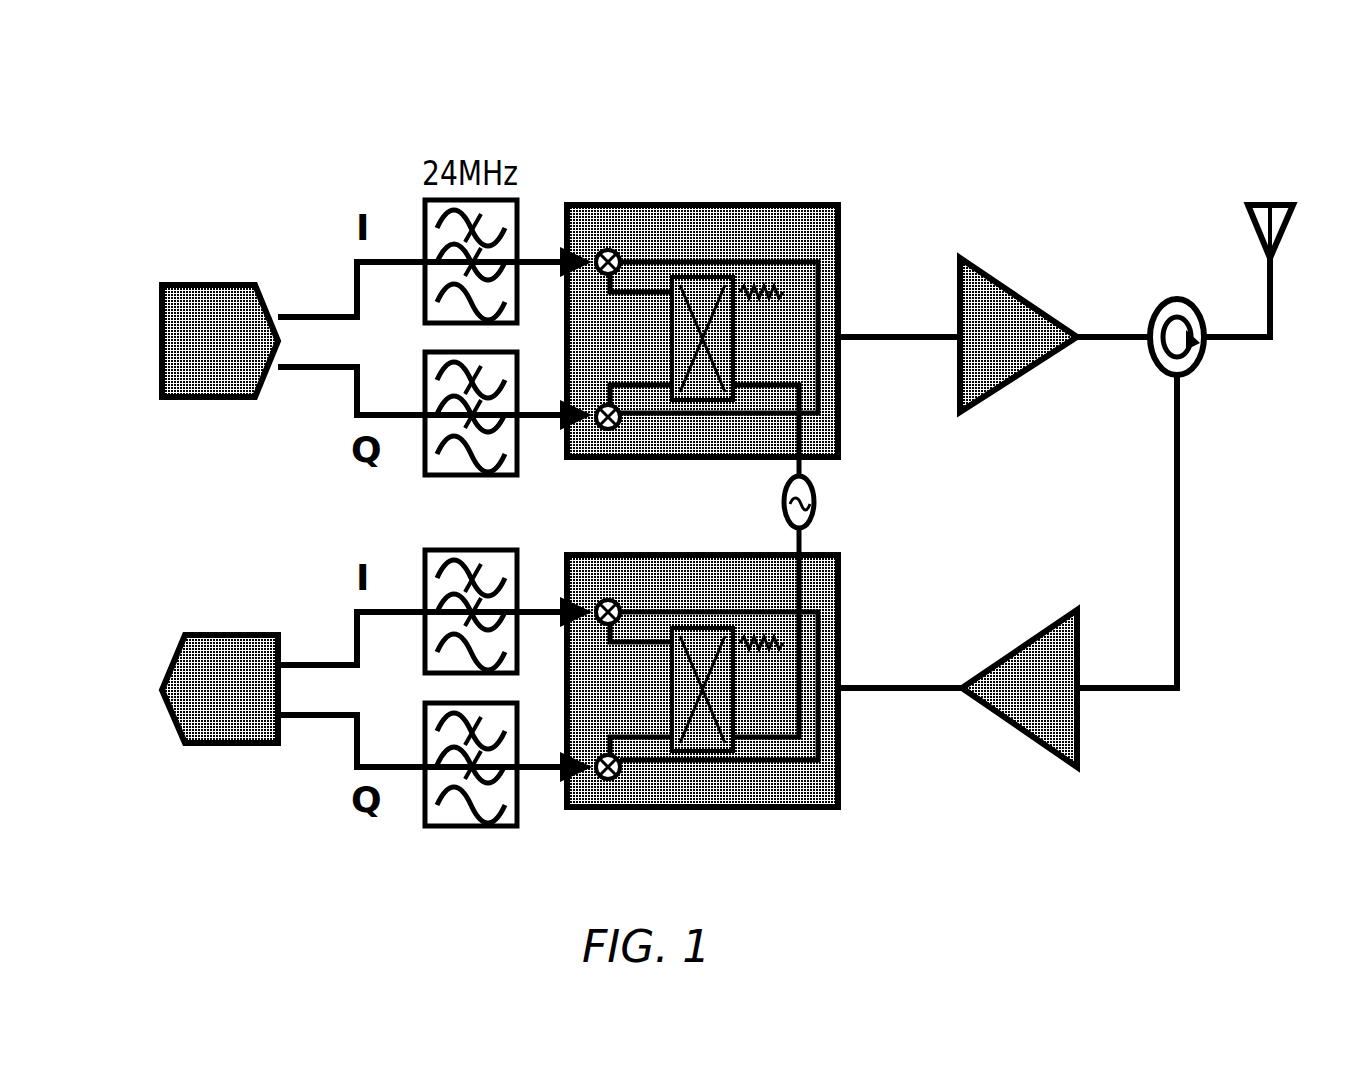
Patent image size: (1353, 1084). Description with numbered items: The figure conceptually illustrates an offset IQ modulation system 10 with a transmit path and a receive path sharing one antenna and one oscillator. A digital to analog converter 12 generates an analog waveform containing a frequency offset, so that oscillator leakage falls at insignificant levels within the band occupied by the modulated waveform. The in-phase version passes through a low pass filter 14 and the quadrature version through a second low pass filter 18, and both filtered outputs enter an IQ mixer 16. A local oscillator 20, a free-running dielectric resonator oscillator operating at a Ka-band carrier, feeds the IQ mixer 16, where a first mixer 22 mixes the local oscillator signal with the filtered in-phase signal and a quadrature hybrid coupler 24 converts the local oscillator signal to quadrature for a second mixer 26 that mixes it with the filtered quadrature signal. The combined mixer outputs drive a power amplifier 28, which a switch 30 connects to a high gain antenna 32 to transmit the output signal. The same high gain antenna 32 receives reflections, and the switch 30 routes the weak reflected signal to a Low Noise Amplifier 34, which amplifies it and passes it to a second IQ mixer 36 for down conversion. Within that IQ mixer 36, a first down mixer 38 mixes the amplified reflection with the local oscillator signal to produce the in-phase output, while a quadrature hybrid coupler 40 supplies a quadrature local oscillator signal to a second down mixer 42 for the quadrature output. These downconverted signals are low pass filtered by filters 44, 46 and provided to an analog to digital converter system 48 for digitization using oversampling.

The IQ modulation system 10 is at (253, 832).
The digital to analog converter 12 is at (195, 290).
The low pass filter 14 is at (425, 200).
The IQ mixer 16 is at (729, 290).
The second low pass filter 18 is at (435, 452).
The local oscillator 20 is at (818, 488).
The first mixer 22 is at (590, 242).
The quadrature hybrid coupler 24 is at (703, 255).
The second mixer 26 is at (600, 436).
The power amplifier 28 is at (1015, 287).
The switch 30 is at (1170, 300).
The high gain antenna 32 is at (1272, 205).
The Low Noise Amplifier 34 is at (1083, 735).
The IQ mixer 36 is at (726, 707).
The first down mixer 38 is at (618, 592).
The quadrature hybrid coupler 40 is at (742, 812).
The second down mixer 42 is at (587, 813).
The low pass filter 44 is at (435, 575).
The low pass filter 46 is at (440, 837).
The analog to digital converter system 48 is at (222, 647).